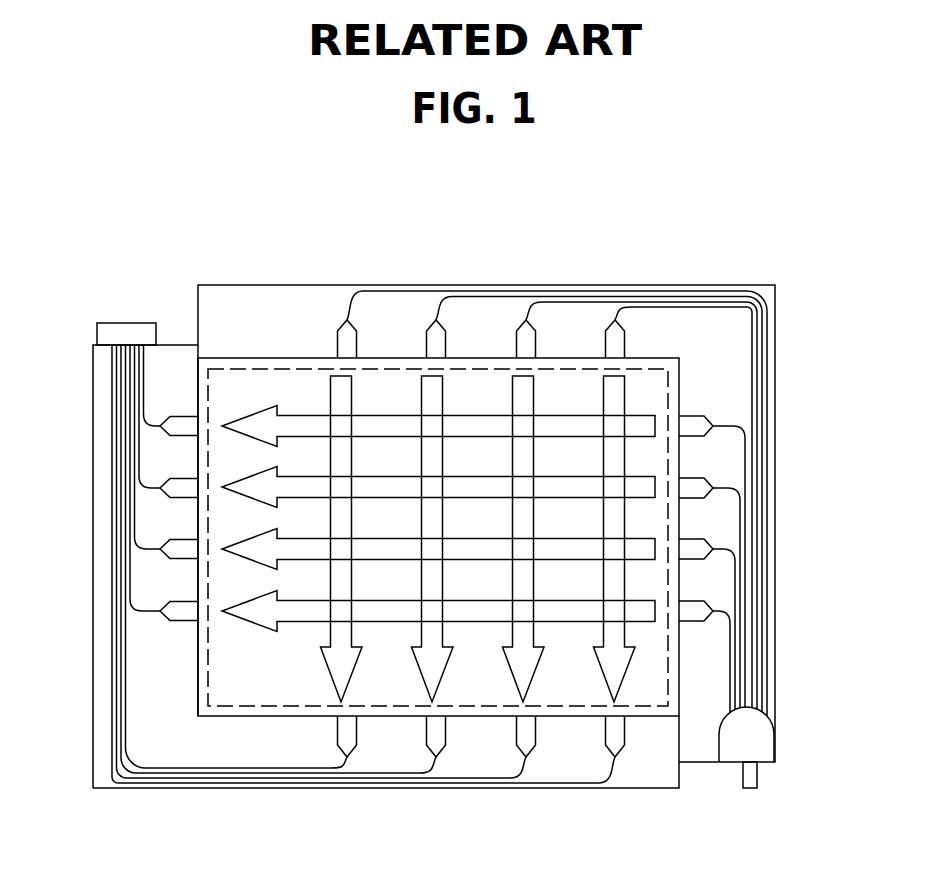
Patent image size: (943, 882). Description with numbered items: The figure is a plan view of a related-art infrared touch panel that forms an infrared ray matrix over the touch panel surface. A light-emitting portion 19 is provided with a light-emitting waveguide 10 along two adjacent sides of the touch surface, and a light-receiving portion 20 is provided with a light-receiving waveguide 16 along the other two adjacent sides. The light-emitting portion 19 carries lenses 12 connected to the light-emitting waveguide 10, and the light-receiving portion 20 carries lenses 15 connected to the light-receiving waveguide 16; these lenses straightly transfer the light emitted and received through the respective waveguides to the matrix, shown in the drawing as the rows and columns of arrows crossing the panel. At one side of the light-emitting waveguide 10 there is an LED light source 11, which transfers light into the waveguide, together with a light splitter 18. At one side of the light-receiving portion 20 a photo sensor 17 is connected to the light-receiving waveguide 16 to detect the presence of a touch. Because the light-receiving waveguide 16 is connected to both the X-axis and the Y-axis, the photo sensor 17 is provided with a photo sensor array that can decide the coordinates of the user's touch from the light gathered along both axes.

The light-emitting waveguide 10 is at (768, 495).
The LED light source 11 is at (751, 793).
The lenses 12 is at (338, 338).
The lenses 15 is at (170, 622).
The light-receiving waveguide 16 is at (113, 527).
The photo sensor 17 is at (113, 322).
The light splitter 18 is at (765, 741).
The light-emitting portion 19 is at (234, 300).
The light-receiving portion 20 is at (645, 778).